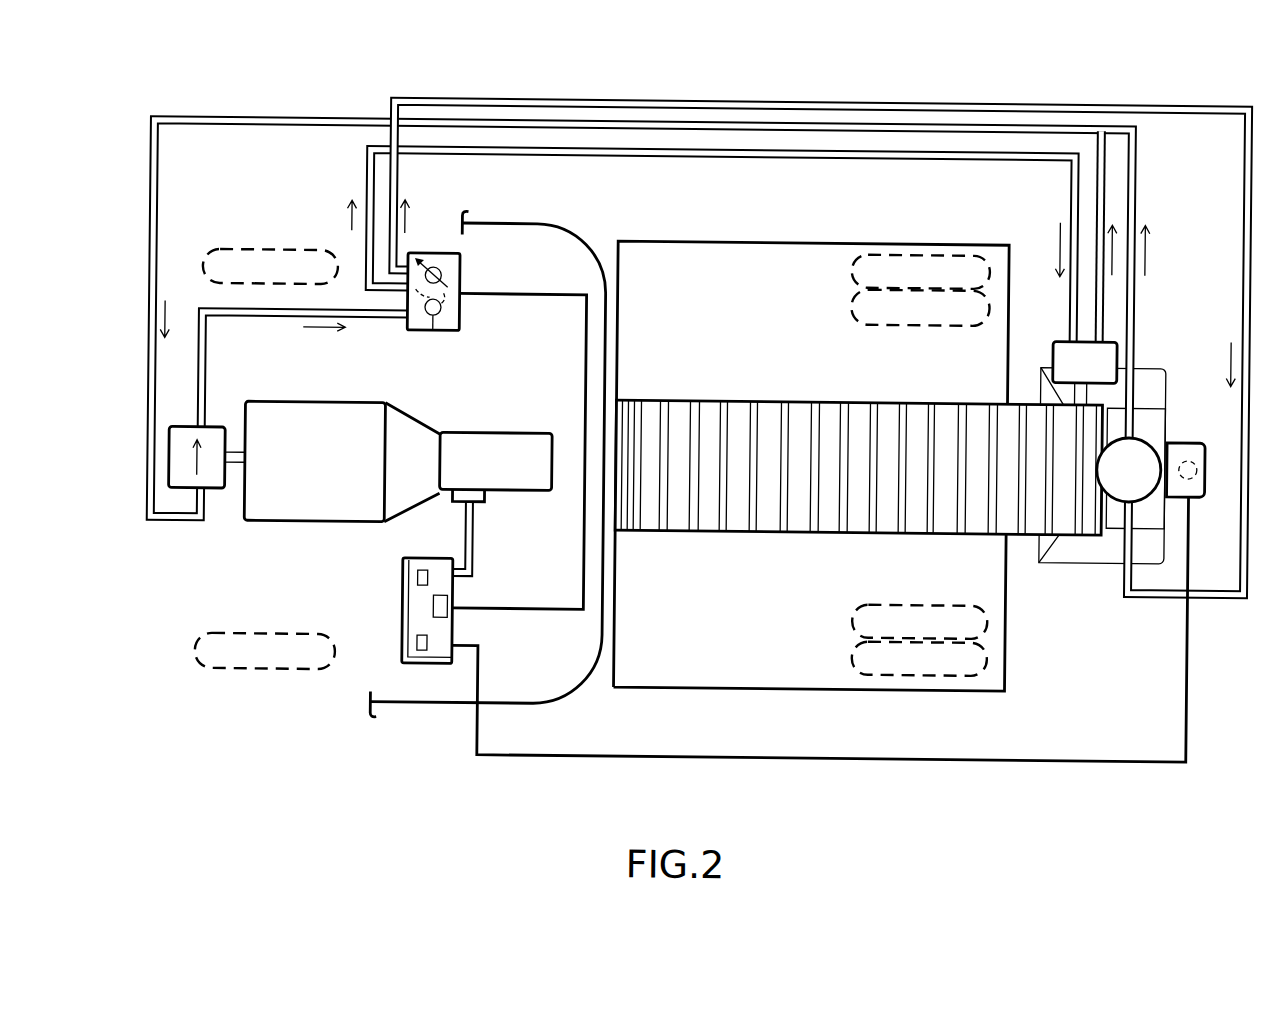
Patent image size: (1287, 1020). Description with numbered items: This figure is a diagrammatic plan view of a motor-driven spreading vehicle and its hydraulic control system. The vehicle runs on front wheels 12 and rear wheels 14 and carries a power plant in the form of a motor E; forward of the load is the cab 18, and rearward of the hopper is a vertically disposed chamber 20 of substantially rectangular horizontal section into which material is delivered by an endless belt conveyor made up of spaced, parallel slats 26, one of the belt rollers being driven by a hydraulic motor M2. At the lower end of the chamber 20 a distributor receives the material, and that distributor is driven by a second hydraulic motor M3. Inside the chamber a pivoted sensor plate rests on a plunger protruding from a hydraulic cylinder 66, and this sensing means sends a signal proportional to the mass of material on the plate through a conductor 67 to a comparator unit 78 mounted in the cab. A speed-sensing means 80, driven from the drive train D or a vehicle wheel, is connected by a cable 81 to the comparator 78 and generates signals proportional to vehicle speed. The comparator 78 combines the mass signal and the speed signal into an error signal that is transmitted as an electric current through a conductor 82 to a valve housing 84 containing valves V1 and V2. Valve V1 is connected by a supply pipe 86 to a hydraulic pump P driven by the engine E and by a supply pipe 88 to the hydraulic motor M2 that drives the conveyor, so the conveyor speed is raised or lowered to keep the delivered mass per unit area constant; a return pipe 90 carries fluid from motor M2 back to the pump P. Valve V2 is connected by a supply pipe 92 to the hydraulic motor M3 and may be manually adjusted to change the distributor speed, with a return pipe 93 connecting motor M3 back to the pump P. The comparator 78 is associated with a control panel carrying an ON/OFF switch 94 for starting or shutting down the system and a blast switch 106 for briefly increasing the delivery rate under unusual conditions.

The front wheels 12 is at (285, 255).
The rear wheels 14 is at (926, 254).
The cab 18 is at (541, 225).
The chamber 20 is at (1143, 365).
The slats 26 is at (705, 408).
The hydraulic cylinder 66 is at (1192, 452).
The conductor 67 is at (696, 758).
The comparator unit 78 is at (403, 604).
The speed-sensing means 80 is at (487, 505).
The cable 81 is at (476, 540).
The conductor 82 is at (503, 608).
The valve housing 84 is at (455, 334).
The supply pipe 86 is at (272, 321).
The supply pipe 88 is at (366, 178).
The return pipe 90 is at (1100, 193).
The supply pipe 92 is at (393, 181).
The return pipe 93 is at (1135, 318).
The ON/OFF switch 94 is at (444, 621).
The blast switch 106 is at (423, 654).
The hydraulic pump P is at (168, 453).
The motor (engine) E is at (318, 471).
The drive train D is at (498, 476).
The valve V1 is at (428, 334).
The valve V2 is at (432, 266).
The hydraulic motor M2 is at (1098, 371).
The hydraulic motor M3 is at (1144, 477).